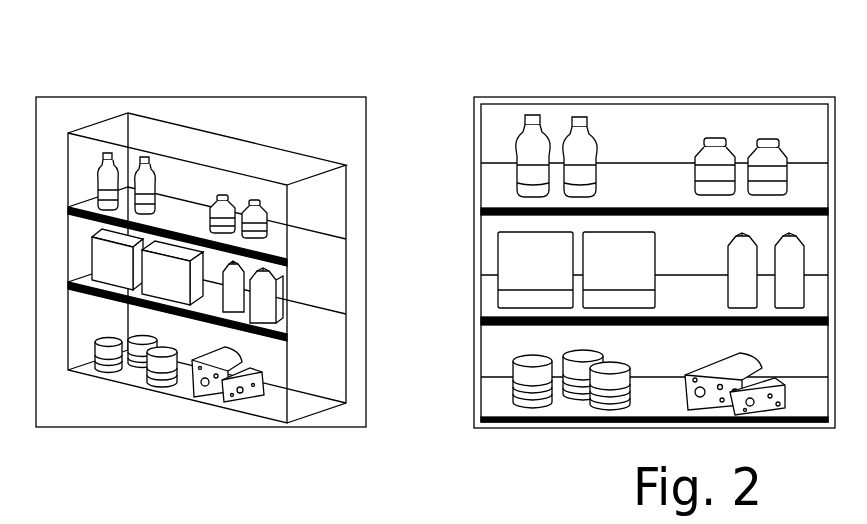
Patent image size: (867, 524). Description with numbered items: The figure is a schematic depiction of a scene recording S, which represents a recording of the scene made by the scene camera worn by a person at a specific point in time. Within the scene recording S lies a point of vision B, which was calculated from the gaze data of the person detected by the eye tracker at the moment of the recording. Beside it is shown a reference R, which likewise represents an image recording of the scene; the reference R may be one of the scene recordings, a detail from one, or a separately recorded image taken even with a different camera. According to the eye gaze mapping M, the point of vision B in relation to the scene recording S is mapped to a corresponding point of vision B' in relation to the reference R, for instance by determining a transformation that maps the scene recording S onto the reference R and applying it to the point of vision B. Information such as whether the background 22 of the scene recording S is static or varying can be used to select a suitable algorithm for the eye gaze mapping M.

The scene recording S is at (70, 96).
The point of vision B is at (140, 129).
The eye gaze mapping M is at (154, 164).
The mapped point of vision B' is at (597, 108).
The reference R is at (696, 96).
The background 22 is at (352, 132).